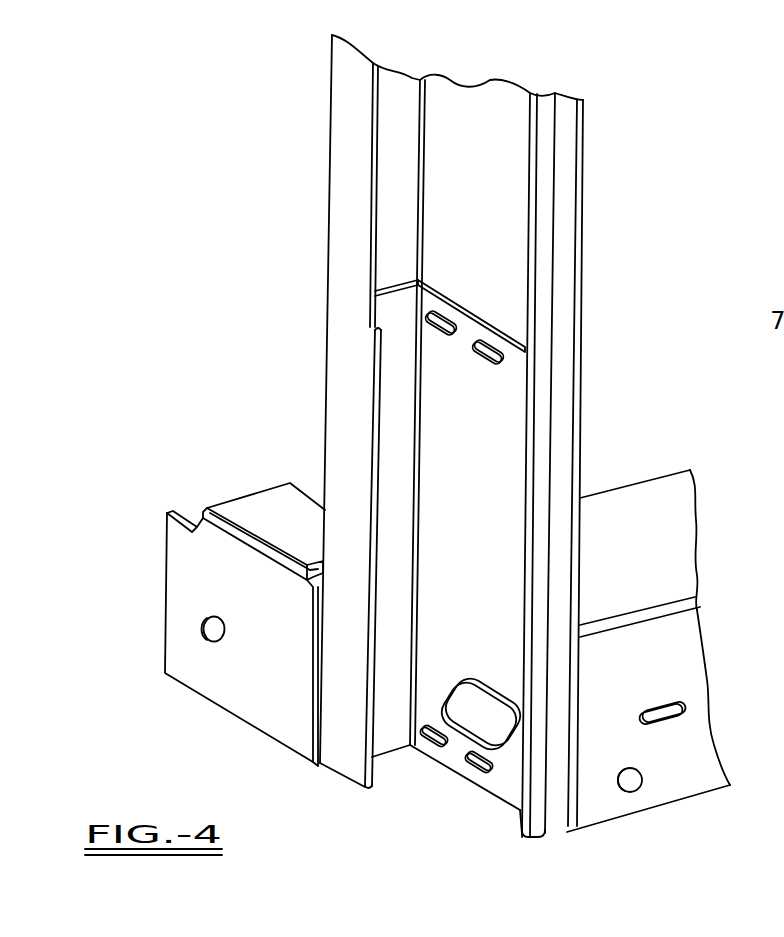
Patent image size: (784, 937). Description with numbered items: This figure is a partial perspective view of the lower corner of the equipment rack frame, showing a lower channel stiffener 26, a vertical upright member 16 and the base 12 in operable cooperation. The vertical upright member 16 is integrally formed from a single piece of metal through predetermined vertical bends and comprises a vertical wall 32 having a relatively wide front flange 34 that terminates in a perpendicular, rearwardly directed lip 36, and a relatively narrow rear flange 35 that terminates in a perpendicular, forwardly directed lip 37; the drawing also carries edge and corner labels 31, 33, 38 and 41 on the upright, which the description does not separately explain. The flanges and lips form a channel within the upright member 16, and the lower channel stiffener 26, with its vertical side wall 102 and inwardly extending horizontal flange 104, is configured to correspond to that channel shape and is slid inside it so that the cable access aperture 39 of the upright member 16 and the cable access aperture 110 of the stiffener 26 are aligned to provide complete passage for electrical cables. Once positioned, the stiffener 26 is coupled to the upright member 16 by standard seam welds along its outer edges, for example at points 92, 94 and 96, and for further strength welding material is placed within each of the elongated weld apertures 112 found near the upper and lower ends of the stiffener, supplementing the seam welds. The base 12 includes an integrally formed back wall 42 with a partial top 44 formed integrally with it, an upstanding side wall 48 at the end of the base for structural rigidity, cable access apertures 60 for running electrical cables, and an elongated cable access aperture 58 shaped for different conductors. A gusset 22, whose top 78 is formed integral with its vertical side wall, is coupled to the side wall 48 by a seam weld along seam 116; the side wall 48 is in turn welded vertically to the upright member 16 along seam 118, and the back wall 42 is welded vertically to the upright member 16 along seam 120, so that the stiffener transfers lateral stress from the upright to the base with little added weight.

The base 12 is at (673, 618).
The vertical upright member 16 is at (484, 469).
The gusset 22 is at (206, 595).
The lower channel stiffener 26 is at (476, 425).
The web corner 31 is at (425, 102).
The vertical wall 32 is at (503, 112).
The flange edge 33 is at (581, 165).
The front flange 34 is at (392, 139).
The rear flange 35 is at (568, 185).
The lip 36 is at (296, 399).
The lip 37 is at (520, 836).
The flange lip 38 is at (345, 83).
The cable access aperture 39 is at (465, 713).
The lower end of flange 41 is at (537, 836).
The back wall 42 is at (660, 740).
The partial top 44 is at (670, 542).
The upstanding side wall 48 is at (206, 639).
The elongated cable access aperture 58 is at (660, 705).
The cable access aperture 60 is at (212, 630).
The top 78 is at (290, 507).
The seam weld point 92 is at (460, 303).
The seam weld point 94 is at (387, 288).
The seam weld point 96 is at (372, 752).
The vertical side wall 102 is at (318, 550).
The horizontal flange 104 is at (378, 338).
The cable access aperture 110 is at (448, 731).
The elongated weld aperture 112 is at (490, 352).
The seam 116 is at (242, 537).
The seam 118 is at (316, 695).
The seam 120 is at (574, 800).